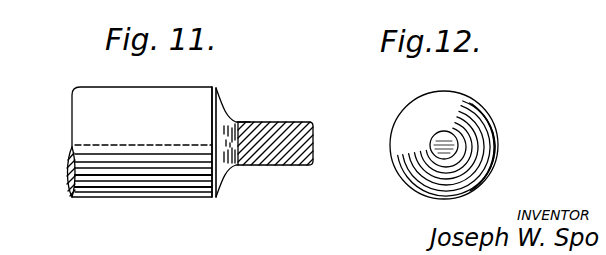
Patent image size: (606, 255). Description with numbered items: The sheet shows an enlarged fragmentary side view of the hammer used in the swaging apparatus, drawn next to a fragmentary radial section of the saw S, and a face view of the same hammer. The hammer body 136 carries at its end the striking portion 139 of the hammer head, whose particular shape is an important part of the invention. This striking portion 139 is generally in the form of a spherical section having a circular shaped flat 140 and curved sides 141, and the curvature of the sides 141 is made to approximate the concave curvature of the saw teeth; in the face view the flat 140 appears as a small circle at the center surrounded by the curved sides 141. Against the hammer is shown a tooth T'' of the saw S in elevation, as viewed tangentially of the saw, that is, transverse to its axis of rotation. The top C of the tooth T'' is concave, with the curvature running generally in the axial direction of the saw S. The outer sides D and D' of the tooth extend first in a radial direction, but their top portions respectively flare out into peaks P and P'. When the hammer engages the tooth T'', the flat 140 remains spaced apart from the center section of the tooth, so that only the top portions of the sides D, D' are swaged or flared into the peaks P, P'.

In FIG. 11, the cylindrical body 136 is at (90, 98).
In FIG. 11, the striking portion 139 is at (211, 129).
In FIG. 12, the striking portion 139 is at (466, 117).
In FIG. 12, the flat 140 is at (447, 138).
In FIG. 11, the curved sides 141 is at (210, 148).
In FIG. 12, the curved sides 141 is at (413, 147).
In FIG. 11, the peak P is at (235, 91).
In FIG. 11, the peak P' is at (223, 205).
In FIG. 11, the outer side D is at (251, 112).
In FIG. 11, the outer side D' is at (247, 184).
In FIG. 11, the top C is at (228, 140).
In FIG. 11, the saw S is at (288, 135).
In FIG. 11, the tooth T'' is at (292, 86).